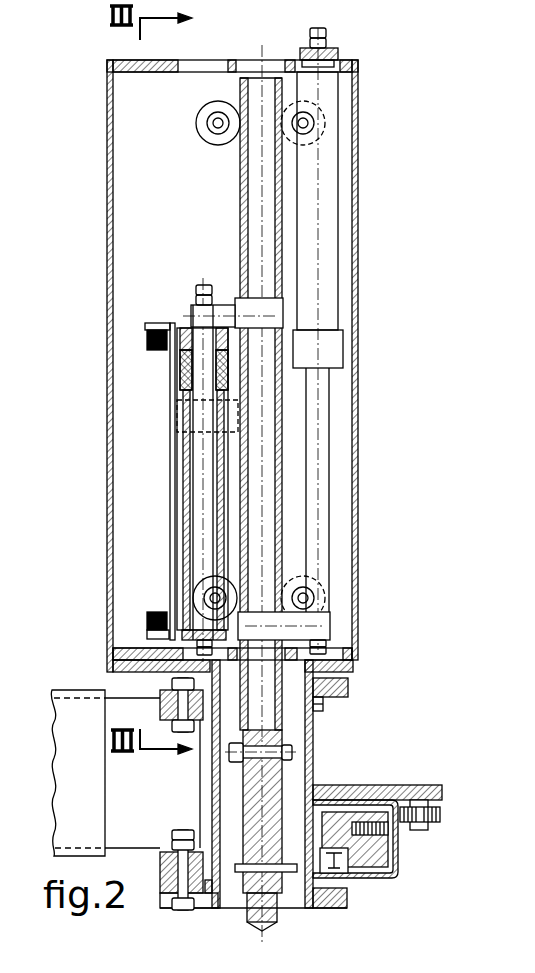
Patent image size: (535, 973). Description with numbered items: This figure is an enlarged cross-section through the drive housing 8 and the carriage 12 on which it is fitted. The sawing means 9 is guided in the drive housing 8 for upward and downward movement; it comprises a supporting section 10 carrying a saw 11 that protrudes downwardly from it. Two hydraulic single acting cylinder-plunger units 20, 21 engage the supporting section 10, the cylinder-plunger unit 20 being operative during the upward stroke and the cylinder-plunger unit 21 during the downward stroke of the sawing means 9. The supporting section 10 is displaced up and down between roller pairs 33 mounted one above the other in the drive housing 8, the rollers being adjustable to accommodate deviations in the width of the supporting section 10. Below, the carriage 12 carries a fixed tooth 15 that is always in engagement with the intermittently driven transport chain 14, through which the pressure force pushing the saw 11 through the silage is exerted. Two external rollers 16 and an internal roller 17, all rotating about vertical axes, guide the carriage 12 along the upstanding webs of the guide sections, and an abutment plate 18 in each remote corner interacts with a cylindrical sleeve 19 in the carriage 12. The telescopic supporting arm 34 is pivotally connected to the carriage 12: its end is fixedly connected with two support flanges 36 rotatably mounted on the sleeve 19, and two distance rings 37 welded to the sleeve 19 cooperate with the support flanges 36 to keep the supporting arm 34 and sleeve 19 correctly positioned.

The drive housing 8 is at (366, 208).
The sawing means 9 is at (278, 427).
The supporting section 10 is at (281, 472).
The saw 11 is at (273, 926).
The carriage 12 is at (352, 784).
The transport chain 14 is at (349, 880).
The fixed tooth 15 is at (368, 880).
The external rollers 16 is at (435, 824).
The internal roller 17 is at (387, 857).
The abutment plate 18 is at (331, 910).
The cylindrical sleeve 19 is at (316, 740).
The cylinder-plunger unit 20 is at (180, 508).
The cylinder-plunger unit 21 is at (327, 246).
The roller pairs 33 is at (298, 140).
The supporting arm 34 is at (123, 714).
The support flanges 36 is at (347, 687).
The distance rings 37 is at (323, 705).